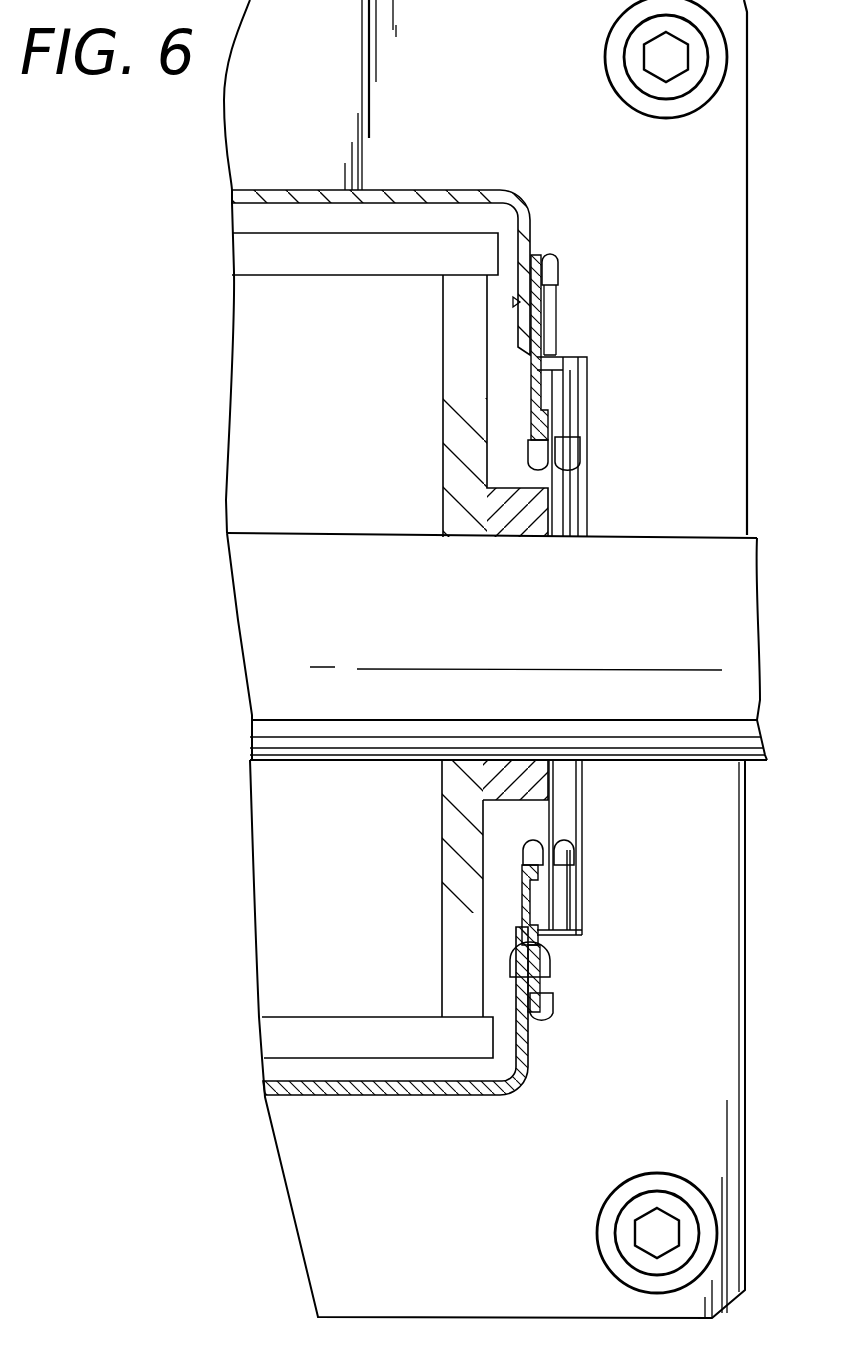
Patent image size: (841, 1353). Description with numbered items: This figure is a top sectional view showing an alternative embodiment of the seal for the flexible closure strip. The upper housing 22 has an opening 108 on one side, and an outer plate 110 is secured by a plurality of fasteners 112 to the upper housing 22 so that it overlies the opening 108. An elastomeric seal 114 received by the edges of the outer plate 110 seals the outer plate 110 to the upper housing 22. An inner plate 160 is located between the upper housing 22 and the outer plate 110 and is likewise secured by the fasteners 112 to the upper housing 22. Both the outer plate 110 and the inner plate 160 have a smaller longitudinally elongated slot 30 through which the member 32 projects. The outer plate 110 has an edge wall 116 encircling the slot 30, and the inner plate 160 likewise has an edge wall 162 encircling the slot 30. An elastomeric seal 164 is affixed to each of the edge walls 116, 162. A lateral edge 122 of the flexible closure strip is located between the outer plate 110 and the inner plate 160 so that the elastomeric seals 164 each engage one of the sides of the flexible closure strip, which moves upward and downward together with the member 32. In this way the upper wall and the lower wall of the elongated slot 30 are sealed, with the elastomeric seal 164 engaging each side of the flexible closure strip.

The upper housing 22 is at (443, 192).
The elastomeric seal 114 is at (540, 258).
The fasteners 112 is at (553, 300).
The outer plate 110 is at (548, 340).
The opening 108 is at (515, 362).
The member 32 is at (652, 610).
The elastomeric seal 164 is at (537, 830).
The longitudinally elongated slot 30 is at (537, 822).
The edge wall 162 is at (533, 850).
The edge wall 116 is at (578, 847).
The lateral edge 122 is at (547, 870).
The inner plate 160 is at (523, 935).